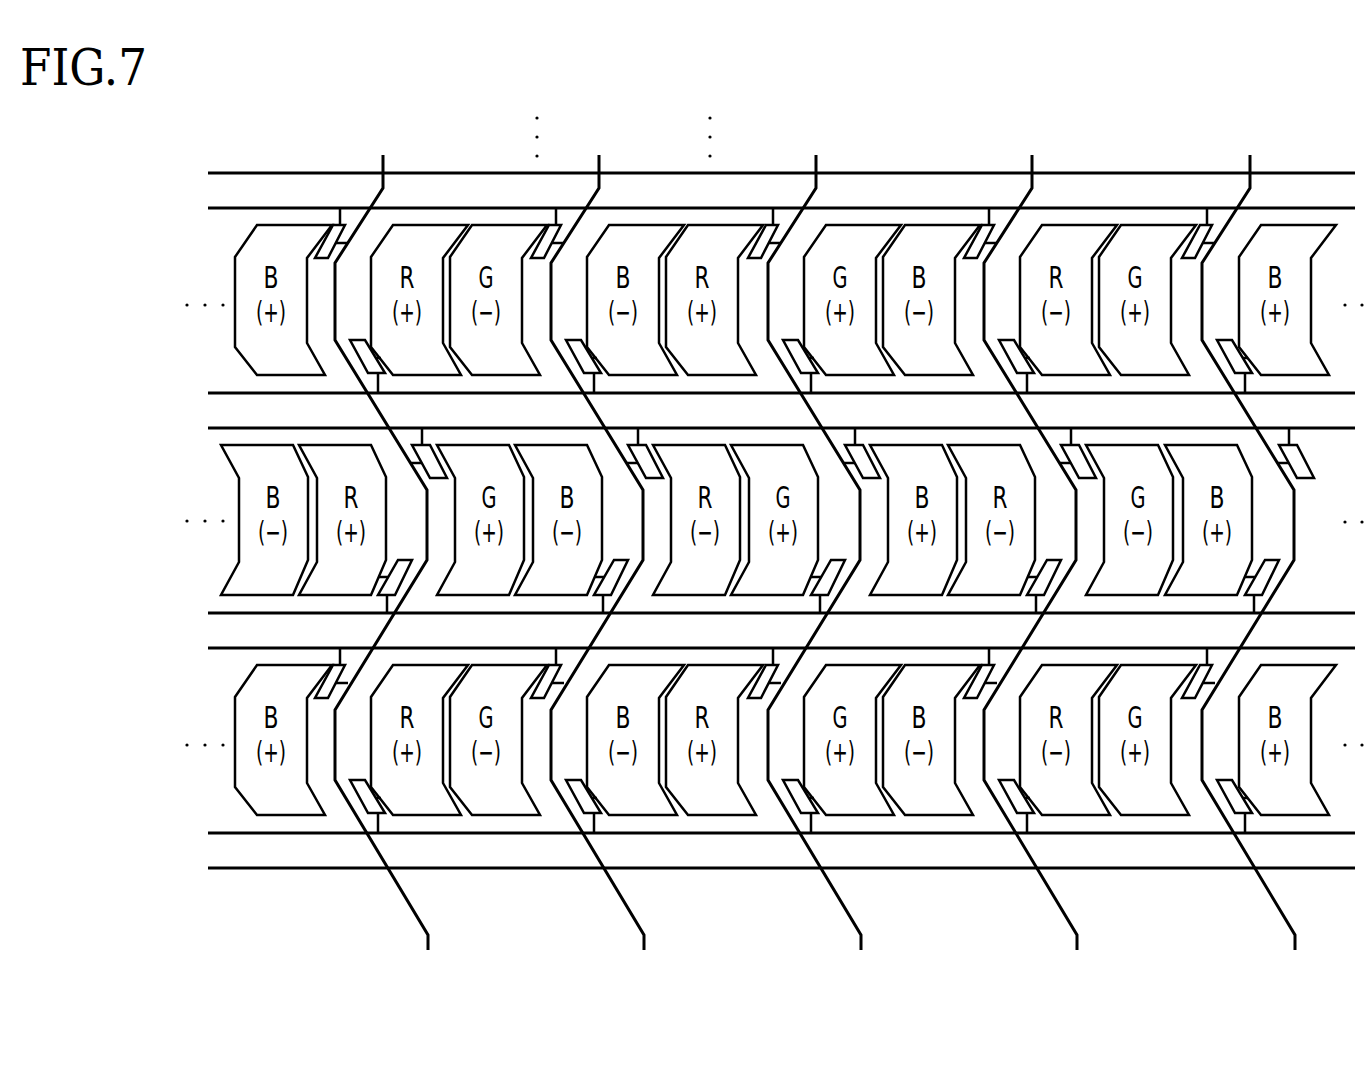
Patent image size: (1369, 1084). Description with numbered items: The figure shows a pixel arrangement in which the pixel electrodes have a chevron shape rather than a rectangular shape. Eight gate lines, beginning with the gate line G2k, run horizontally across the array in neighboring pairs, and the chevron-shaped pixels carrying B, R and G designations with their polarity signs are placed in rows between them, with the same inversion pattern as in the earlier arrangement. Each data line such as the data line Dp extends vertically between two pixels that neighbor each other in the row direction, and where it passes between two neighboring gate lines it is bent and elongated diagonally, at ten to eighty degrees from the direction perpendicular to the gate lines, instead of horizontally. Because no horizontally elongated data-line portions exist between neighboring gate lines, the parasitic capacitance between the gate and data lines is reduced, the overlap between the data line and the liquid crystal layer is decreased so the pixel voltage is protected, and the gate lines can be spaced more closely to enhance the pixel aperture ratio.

The gate line G2k is at (758, 175).
The data line Dp is at (381, 515).